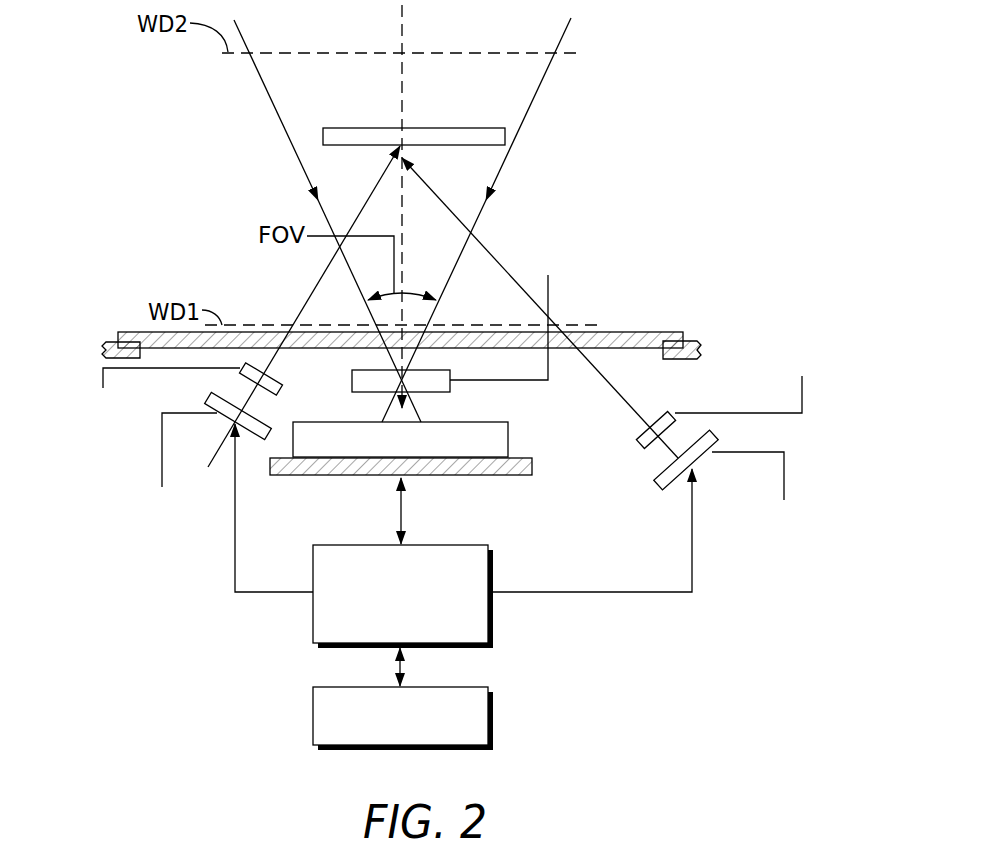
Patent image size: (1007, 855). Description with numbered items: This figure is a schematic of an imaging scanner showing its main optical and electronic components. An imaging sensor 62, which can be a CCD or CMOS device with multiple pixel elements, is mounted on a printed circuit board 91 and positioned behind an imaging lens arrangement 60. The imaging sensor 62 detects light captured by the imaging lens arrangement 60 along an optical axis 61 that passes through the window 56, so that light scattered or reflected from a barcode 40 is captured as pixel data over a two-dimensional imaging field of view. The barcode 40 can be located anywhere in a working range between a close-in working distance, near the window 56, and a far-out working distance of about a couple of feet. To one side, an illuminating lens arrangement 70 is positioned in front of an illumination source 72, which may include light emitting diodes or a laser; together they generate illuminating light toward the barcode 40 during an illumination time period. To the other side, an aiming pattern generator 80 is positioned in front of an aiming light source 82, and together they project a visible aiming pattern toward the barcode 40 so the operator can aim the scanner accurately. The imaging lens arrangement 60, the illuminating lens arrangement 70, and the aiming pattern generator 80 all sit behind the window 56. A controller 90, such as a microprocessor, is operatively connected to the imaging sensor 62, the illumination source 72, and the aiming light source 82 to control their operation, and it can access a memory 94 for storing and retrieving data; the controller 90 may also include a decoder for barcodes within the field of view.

The barcode 40 is at (472, 128).
The window 56 is at (135, 332).
The imaging lens arrangement 60 is at (352, 382).
The optical axis 61 is at (399, 29).
The imaging sensor 62 is at (497, 422).
The illuminating lens arrangement 70 is at (807, 292).
The illumination source 72 is at (790, 558).
The aiming pattern generator 80 is at (80, 390).
The aiming light source 82 is at (153, 568).
The controller 90 is at (475, 545).
The printed circuit board 91 is at (440, 476).
The memory 94 is at (475, 687).